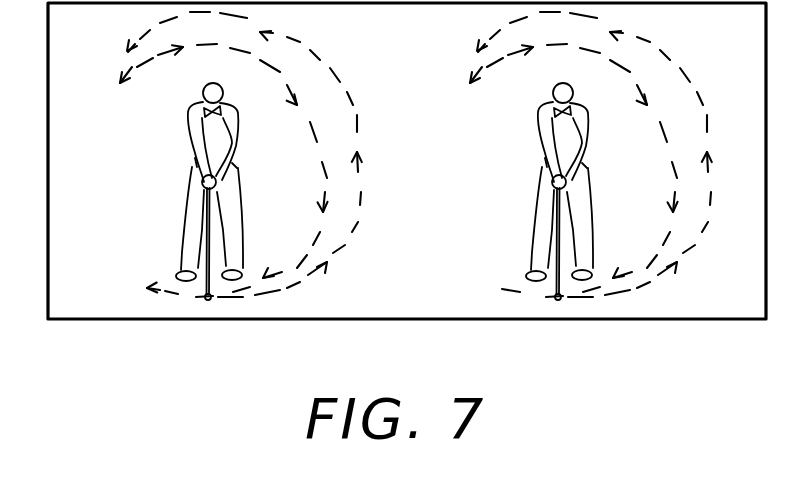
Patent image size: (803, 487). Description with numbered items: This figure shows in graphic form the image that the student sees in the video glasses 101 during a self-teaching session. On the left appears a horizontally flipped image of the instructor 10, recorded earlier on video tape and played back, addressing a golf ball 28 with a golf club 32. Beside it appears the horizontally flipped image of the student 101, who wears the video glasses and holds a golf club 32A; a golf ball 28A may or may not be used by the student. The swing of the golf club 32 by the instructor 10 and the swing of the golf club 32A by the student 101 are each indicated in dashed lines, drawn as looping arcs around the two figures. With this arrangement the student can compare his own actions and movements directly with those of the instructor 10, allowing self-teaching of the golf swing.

The instructor 10 is at (238, 133).
The video glasses 101 is at (593, 182).
The golf club 32 is at (212, 240).
The golf club 32A is at (609, 241).
The golf ball 28 is at (208, 300).
The golf ball 28A is at (535, 329).